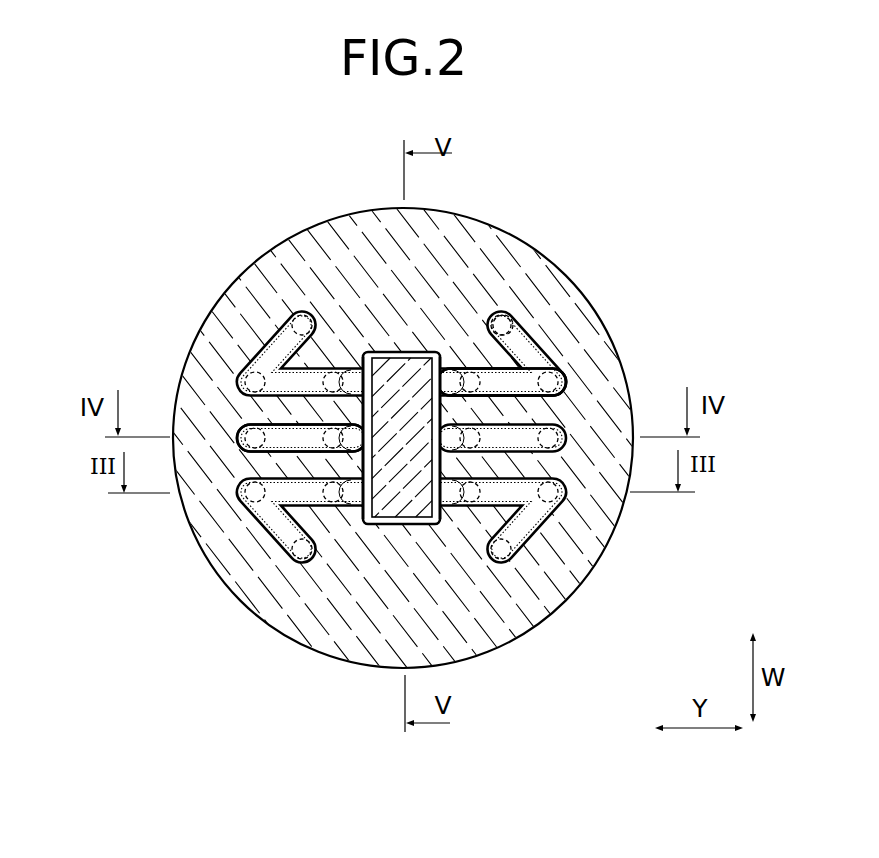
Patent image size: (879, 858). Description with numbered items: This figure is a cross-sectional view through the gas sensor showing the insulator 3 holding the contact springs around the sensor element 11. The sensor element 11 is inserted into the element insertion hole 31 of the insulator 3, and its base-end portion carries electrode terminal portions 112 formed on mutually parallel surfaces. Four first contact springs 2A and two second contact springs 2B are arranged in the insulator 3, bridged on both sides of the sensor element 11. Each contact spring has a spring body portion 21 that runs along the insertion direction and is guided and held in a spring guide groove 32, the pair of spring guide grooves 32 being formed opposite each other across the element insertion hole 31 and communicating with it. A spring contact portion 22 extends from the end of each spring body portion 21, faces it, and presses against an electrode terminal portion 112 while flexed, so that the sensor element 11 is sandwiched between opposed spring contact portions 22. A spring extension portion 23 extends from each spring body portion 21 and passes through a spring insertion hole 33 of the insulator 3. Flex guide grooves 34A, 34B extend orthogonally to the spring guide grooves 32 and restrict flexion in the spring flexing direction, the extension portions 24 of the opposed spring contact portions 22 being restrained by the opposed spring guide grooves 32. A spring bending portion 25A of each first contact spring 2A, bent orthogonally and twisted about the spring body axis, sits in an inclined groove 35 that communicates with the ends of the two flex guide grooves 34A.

The insulator 3 is at (513, 613).
The sensor element 11 is at (387, 393).
The electrode terminal portion 112 is at (364, 378).
The spring body portion 21 is at (240, 378).
The spring contact portion 22 is at (240, 400).
The spring extension portion 23 is at (322, 352).
The extension portion 24 is at (345, 364).
The spring bending portion 25A is at (300, 322).
The first contact spring 2A is at (279, 542).
The second contact spring 2B is at (282, 454).
The element insertion hole 31 is at (450, 372).
The spring guide groove 32 is at (565, 378).
The spring insertion hole 33 is at (518, 323).
The flex guide groove 34A is at (608, 354).
The flex guide groove 34B is at (589, 489).
The inclined groove 35 is at (543, 362).